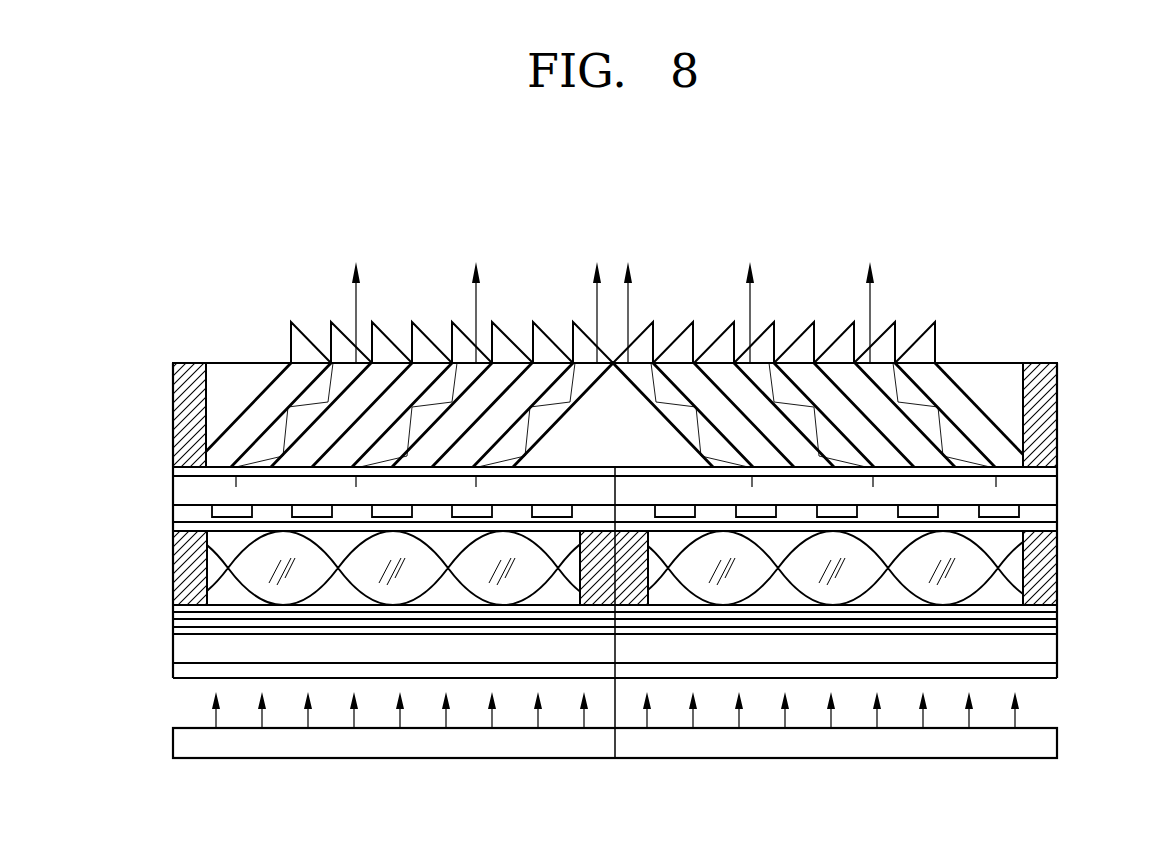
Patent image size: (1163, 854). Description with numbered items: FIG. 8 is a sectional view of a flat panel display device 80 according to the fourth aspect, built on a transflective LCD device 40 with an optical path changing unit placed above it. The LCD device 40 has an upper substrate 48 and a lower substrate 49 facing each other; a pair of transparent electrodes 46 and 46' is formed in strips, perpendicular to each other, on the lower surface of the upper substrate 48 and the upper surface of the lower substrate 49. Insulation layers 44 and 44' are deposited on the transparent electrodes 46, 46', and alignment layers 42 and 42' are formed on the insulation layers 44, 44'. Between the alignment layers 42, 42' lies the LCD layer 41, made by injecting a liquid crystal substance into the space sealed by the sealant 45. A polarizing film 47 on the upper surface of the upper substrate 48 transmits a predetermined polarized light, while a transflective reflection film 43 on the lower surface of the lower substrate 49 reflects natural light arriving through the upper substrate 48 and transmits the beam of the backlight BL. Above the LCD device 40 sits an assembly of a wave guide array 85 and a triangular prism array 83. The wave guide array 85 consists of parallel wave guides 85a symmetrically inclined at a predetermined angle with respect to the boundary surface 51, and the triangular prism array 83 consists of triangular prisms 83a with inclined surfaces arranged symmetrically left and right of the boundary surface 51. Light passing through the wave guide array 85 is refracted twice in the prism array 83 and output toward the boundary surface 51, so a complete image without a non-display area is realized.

The flat panel display device 80 is at (589, 482).
The triangular prism array 83 is at (613, 288).
The triangular prism 83a is at (707, 312).
The wave guide array 85 is at (641, 372).
The wave guide 85a is at (972, 388).
The LCD device 40 is at (589, 592).
The LCD layer 41 is at (260, 553).
The alignment layer 42 is at (646, 538).
The alignment layer 42' is at (649, 608).
The transflective reflection film 43 is at (1055, 672).
The insulation layer 44 is at (582, 518).
The insulation layer 44' is at (582, 621).
The sealant 45 is at (180, 576).
The transparent electrode 46 is at (666, 515).
The transparent electrode 46' is at (649, 635).
The polarizing film 47 is at (1060, 466).
The upper substrate 48 is at (1053, 490).
The lower substrate 49 is at (1055, 650).
The boundary surface 51 is at (615, 468).
The backlight BL is at (1057, 742).